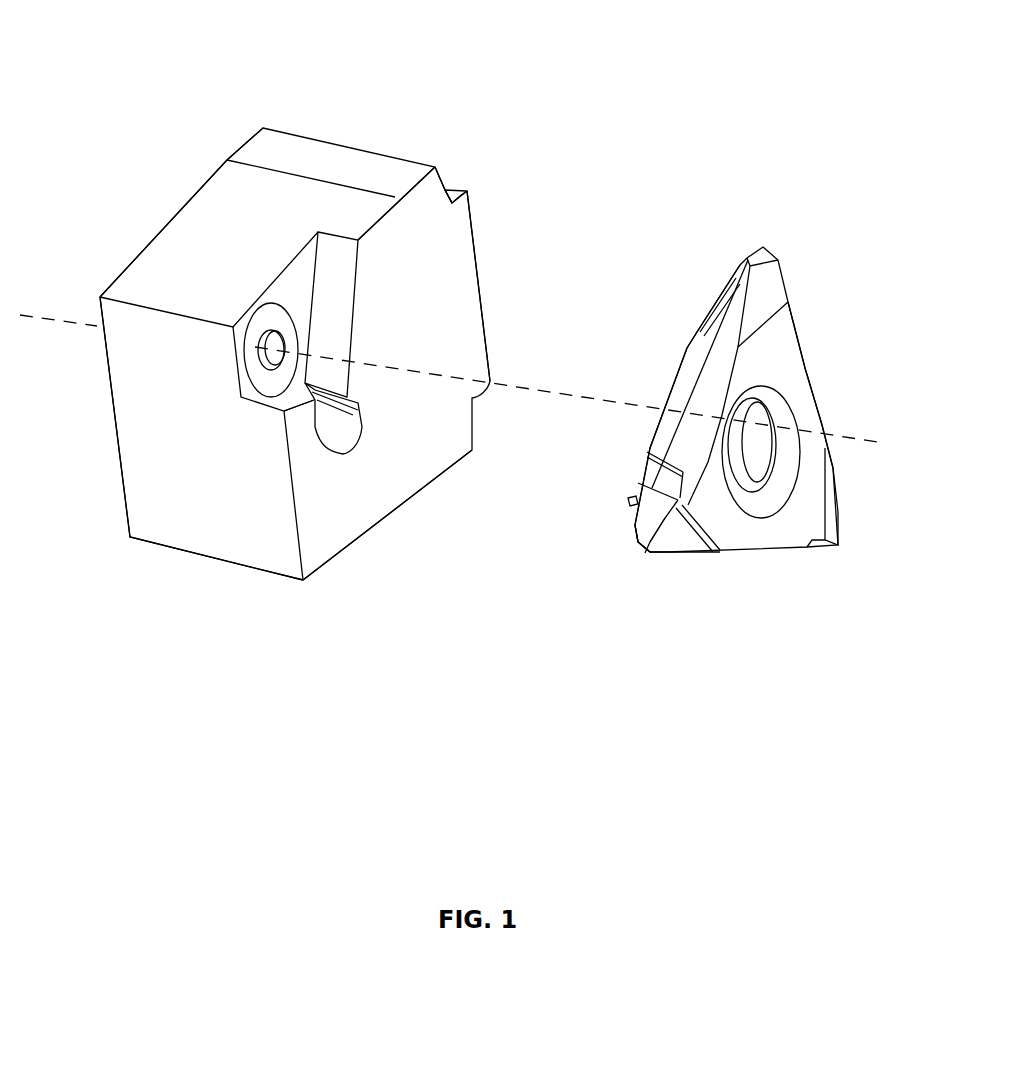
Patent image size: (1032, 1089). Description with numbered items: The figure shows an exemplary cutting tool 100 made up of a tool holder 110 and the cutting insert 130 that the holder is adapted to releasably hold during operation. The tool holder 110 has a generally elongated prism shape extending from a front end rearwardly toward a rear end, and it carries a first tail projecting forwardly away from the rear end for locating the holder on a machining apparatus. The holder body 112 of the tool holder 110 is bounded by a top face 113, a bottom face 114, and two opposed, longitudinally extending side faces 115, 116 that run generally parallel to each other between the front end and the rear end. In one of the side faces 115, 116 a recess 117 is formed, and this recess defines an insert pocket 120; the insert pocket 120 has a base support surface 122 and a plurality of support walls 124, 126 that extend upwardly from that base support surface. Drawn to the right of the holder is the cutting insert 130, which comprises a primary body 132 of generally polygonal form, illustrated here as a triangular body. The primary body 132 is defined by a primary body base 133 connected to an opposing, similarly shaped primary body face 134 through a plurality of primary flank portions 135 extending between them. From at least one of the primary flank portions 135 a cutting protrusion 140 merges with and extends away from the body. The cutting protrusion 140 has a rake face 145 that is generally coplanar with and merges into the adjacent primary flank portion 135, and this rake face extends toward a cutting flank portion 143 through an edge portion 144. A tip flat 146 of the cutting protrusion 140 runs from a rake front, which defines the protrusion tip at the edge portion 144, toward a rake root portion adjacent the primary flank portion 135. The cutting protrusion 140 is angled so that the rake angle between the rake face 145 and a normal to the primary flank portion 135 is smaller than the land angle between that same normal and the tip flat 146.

The cutting tool 100 is at (214, 101).
The tool holder 110 is at (443, 154).
The holder body 112 is at (167, 218).
The top face 113 is at (465, 190).
The bottom face 114 is at (402, 503).
The side face 115 is at (460, 372).
The side face 116 is at (120, 480).
The recess 117 is at (268, 325).
The insert pocket 120 is at (303, 414).
The base support surface 122 is at (245, 337).
The support wall 124 is at (323, 442).
The support wall 126 is at (335, 310).
The cutting insert 130 is at (782, 265).
The primary body 132 is at (813, 375).
The primary body base 133 is at (687, 350).
The primary body face 134 is at (807, 472).
The primary flank portion 135 is at (693, 393).
The cutting protrusion 140 is at (597, 553).
The cutting flank portion 143 is at (640, 550).
The edge portion 144 is at (656, 520).
The rake face 145 is at (648, 507).
The tip flat 146 is at (618, 537).